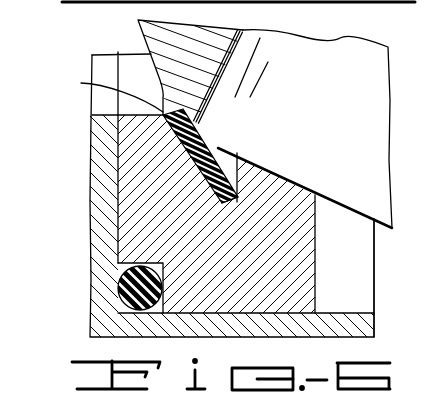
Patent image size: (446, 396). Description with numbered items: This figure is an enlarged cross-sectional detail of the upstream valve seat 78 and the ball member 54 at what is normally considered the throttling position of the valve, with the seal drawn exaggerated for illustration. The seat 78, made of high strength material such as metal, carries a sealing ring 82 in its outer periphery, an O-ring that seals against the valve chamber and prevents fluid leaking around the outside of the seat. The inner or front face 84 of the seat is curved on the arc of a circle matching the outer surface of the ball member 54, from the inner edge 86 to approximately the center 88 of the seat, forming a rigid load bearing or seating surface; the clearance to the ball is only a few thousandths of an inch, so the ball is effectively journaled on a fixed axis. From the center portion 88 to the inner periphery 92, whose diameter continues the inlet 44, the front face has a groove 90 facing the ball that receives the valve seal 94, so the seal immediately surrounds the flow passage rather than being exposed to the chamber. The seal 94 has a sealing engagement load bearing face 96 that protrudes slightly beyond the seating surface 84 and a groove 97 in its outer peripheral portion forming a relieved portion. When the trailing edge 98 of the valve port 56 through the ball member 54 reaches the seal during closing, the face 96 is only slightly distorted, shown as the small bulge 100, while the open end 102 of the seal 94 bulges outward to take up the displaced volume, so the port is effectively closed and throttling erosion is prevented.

The inlet 44 is at (105, 62).
The ball member 54 is at (217, 30).
The valve port 56 is at (358, 85).
The upstream valve seat 78 is at (128, 204).
The sealing ring 82 is at (118, 288).
The front face 84 is at (293, 243).
The inner edge 86 is at (316, 280).
The center 88 is at (240, 210).
The groove 90 is at (190, 153).
The inner periphery 92 is at (127, 114).
The valve seal 94 is at (226, 156).
The sealing engagement load bearing face 96 is at (237, 150).
The groove 97 is at (238, 182).
The trailing edge 98 is at (207, 100).
The bulge 100 is at (207, 133).
The open end 102 is at (105, 93).